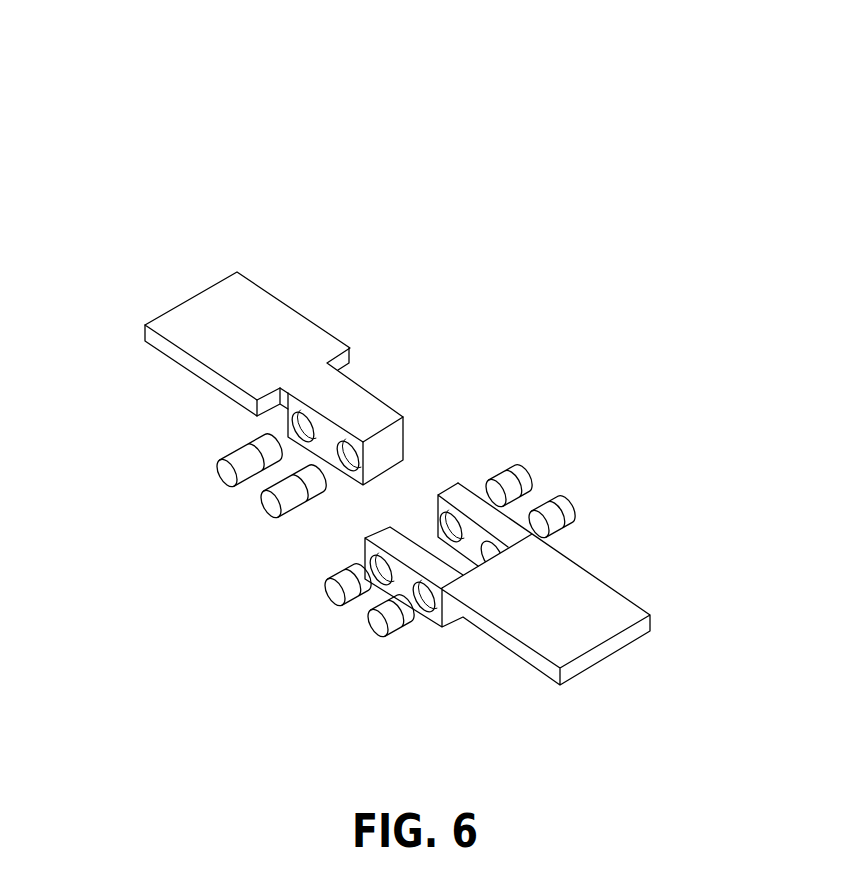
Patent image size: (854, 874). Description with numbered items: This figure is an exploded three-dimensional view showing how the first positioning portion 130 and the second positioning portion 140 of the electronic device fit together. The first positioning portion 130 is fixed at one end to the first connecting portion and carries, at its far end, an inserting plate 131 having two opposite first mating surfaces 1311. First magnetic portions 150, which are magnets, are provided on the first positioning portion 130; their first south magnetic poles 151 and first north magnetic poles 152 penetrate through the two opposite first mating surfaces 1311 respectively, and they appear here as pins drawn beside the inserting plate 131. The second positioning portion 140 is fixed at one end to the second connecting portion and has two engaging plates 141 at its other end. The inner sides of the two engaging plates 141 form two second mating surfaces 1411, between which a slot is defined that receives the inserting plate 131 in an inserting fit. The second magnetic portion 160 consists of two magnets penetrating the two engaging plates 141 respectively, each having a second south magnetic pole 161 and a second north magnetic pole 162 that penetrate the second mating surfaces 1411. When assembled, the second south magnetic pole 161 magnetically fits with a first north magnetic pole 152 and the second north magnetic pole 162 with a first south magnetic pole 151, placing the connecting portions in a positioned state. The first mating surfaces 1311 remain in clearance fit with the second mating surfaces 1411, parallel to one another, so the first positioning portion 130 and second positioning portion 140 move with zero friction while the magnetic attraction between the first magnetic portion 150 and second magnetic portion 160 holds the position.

The first positioning portion 130 is at (264, 253).
The inserting plate 131 is at (264, 387).
The first mating surface 1311 is at (322, 428).
The second positioning portion 140 is at (541, 513).
The engaging plate 141 is at (532, 480).
The second mating surface 1411 is at (468, 532).
The first magnetic portion 150 is at (194, 561).
The first south magnetic pole 151 is at (272, 490).
The first north magnetic pole 152 is at (312, 482).
The second magnetic portion 160 is at (518, 632).
The second south magnetic pole 161 is at (567, 528).
The second north magnetic pole 162 is at (414, 630).